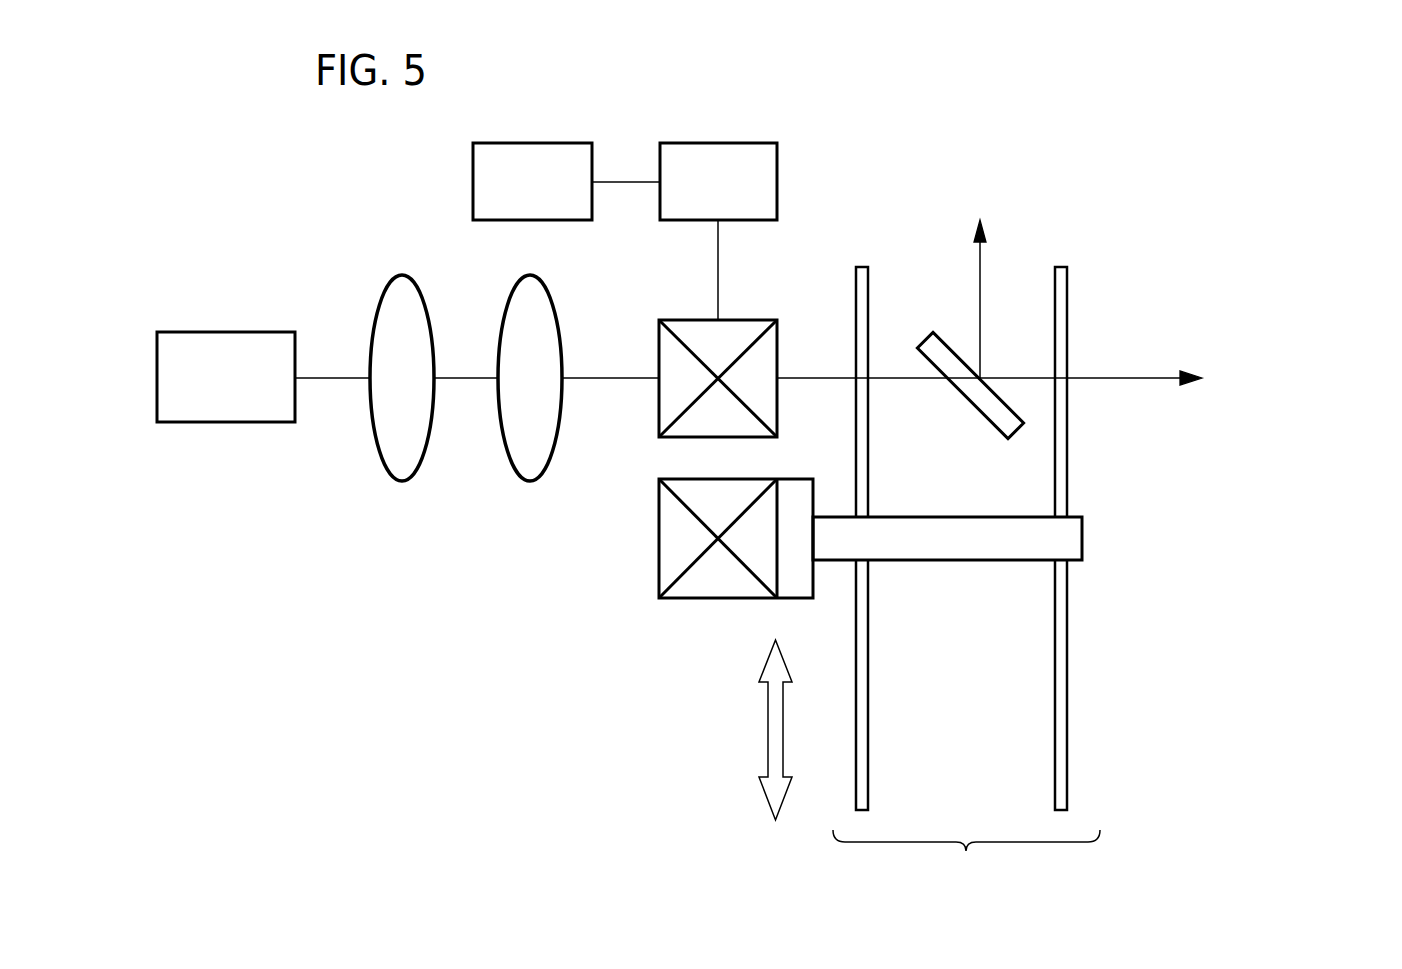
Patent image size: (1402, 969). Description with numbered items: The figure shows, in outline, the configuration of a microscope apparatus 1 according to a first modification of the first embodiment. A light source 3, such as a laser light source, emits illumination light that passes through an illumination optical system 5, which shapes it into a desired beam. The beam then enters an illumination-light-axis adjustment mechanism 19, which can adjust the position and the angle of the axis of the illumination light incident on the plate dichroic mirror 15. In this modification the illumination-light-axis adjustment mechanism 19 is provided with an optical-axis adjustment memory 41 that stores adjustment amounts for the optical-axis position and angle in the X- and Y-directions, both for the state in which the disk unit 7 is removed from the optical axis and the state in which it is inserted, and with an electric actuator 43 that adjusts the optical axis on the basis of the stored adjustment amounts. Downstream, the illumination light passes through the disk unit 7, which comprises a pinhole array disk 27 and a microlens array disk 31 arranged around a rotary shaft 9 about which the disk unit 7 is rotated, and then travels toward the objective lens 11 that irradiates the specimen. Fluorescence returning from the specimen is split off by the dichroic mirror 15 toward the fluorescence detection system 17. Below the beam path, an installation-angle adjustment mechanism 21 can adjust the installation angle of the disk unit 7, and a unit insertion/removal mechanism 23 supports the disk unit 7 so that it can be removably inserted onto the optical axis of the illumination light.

The microscope apparatus 1 is at (444, 688).
The light source 3 is at (228, 424).
The illumination optical system 5 is at (567, 493).
The disk unit 7 is at (966, 862).
The rotary shaft 9 is at (1083, 537).
The objective lens 11 is at (1277, 379).
The plate dichroic mirror 15 is at (973, 410).
The fluorescence detection system 17 is at (977, 268).
The illumination-light-axis adjustment mechanism 19 is at (748, 320).
The installation-angle adjustment mechanism 21 is at (715, 598).
The unit insertion/removal mechanism 23 is at (768, 735).
The pinhole array disk 27 is at (1067, 682).
The microlens array disk 31 is at (868, 700).
The optical-axis adjustment memory 41 is at (537, 143).
The electric actuator 43 is at (712, 143).